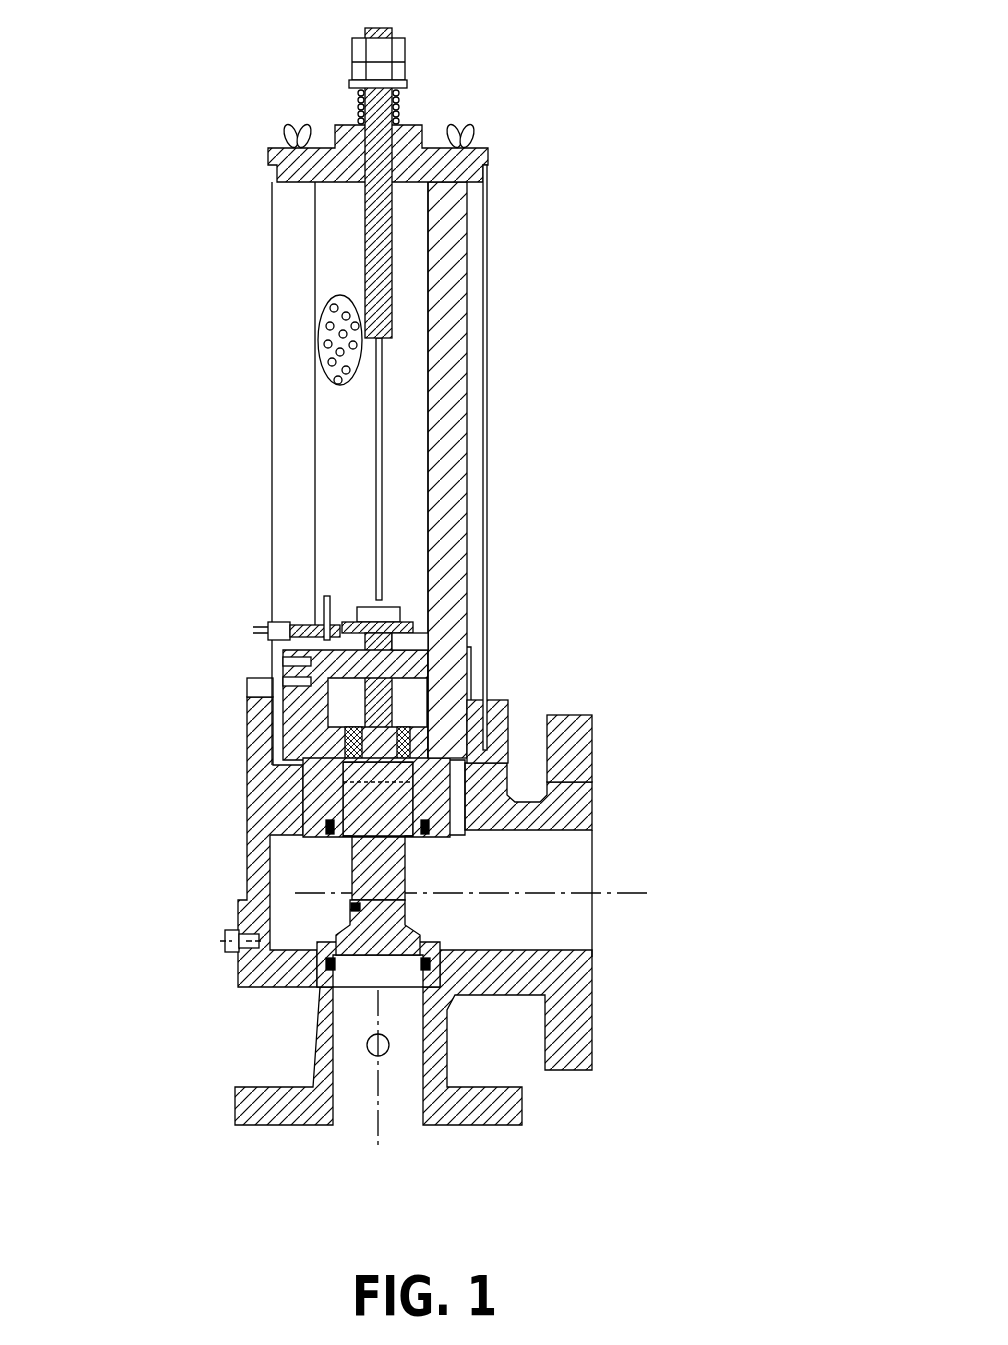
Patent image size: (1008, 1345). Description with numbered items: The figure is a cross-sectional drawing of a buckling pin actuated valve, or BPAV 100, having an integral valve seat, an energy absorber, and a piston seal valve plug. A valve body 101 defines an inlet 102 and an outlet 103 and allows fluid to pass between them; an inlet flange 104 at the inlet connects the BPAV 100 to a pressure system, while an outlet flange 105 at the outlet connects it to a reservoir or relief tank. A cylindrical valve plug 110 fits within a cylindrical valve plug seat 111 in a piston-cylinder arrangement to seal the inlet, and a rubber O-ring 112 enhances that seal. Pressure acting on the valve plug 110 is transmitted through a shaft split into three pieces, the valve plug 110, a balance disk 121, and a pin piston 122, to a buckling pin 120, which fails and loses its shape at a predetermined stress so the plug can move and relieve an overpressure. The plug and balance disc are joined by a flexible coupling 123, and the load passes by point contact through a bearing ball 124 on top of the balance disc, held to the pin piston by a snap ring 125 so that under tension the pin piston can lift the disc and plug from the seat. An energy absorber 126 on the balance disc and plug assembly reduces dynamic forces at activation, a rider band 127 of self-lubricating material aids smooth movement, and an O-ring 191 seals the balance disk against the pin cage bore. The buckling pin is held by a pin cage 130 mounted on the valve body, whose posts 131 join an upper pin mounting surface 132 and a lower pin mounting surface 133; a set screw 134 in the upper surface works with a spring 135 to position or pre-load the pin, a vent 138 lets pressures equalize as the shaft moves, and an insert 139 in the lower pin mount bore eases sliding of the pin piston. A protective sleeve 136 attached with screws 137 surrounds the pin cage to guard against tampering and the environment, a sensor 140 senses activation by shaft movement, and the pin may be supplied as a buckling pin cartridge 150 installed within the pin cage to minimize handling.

The BPAV 100 is at (91, 254).
The valve body 101 is at (263, 822).
The inlet 102 is at (372, 1107).
The outlet 103 is at (563, 897).
The inlet flange 104 is at (275, 1110).
The outlet flange 105 is at (590, 1027).
The valve plug 110 is at (335, 945).
The valve plug seat 111 is at (440, 948).
The O-ring 112 is at (232, 938).
The buckling pin 120 is at (385, 365).
The balance disk 121 is at (307, 793).
The pin piston 122 is at (352, 688).
The flexible coupling 123 is at (353, 903).
The bearing ball 124 is at (362, 790).
The snap ring 125 is at (505, 735).
The energy absorber 126 is at (343, 750).
The rider band 127 is at (470, 775).
The pin cage 130 is at (422, 197).
The posts 131 is at (447, 250).
The upper pin mounting surface 132 is at (345, 165).
The lower pin mounting surface 133 is at (473, 698).
The set screw 134 is at (400, 100).
The spring 135 is at (352, 103).
The protective sleeve 136 is at (485, 272).
The screws 137 is at (468, 127).
The vent 138 is at (463, 735).
The insert 139 is at (455, 663).
The sensor 140 is at (277, 618).
The buckling pin cartridge 150 is at (358, 530).
The O-ring 191 is at (440, 820).